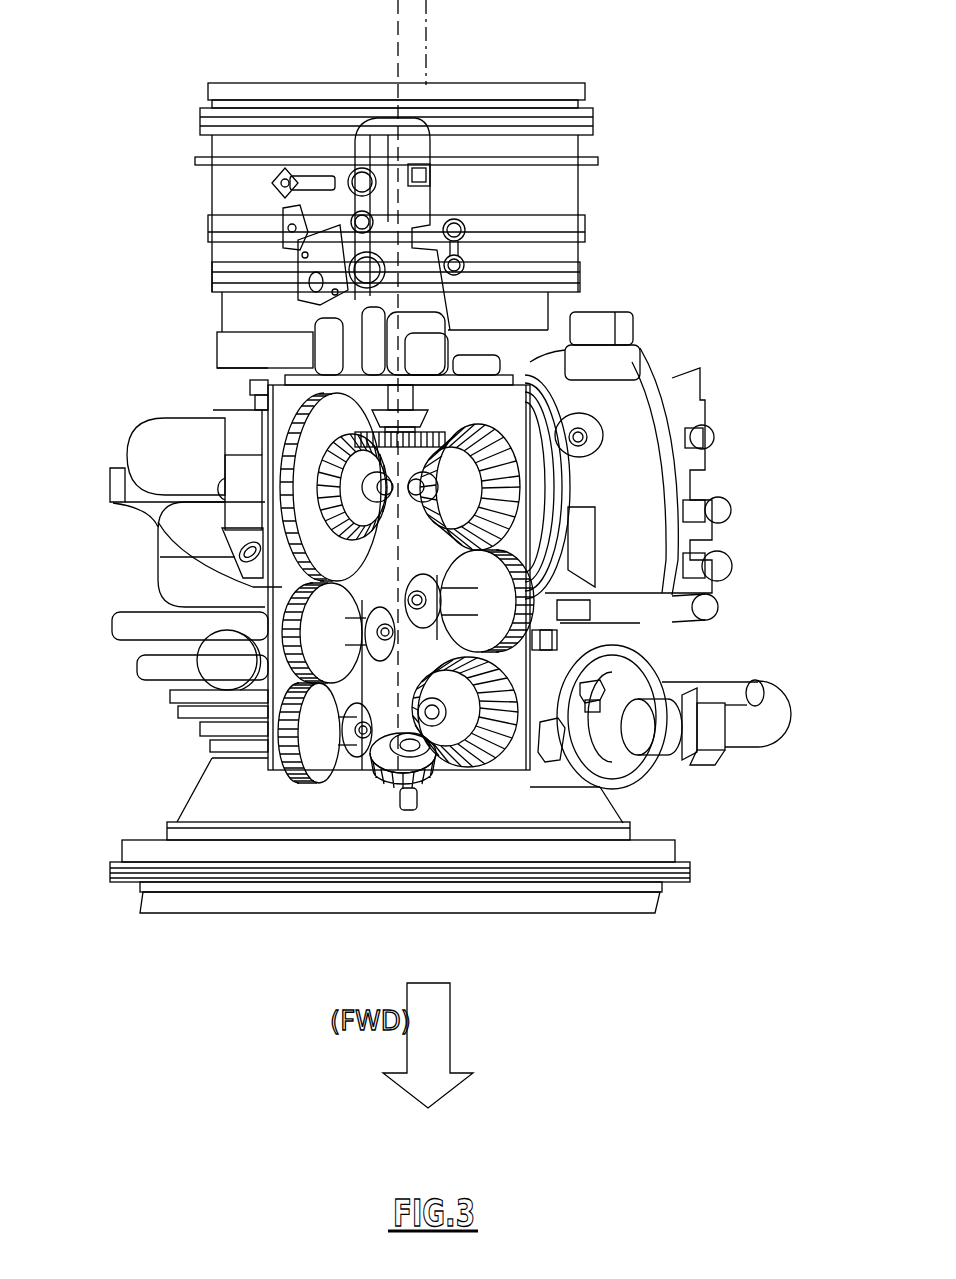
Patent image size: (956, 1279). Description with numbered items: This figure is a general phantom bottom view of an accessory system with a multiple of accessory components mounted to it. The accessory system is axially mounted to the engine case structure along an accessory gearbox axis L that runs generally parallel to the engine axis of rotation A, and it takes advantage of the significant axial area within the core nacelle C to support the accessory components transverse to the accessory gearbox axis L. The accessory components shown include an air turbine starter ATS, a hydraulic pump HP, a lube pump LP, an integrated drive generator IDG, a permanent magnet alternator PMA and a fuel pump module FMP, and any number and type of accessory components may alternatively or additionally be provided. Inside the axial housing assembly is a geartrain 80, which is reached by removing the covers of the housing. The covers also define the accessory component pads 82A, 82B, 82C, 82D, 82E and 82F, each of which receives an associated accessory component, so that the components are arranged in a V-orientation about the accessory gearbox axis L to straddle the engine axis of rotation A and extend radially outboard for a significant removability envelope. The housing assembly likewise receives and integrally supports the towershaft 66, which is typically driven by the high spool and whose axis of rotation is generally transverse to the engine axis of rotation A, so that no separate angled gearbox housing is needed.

The accessory gearbox axis L is at (398, 42).
The engine axis of rotation A is at (426, 30).
The lube pump LP is at (415, 150).
The core nacelle C is at (560, 193).
The accessory component pad 82C is at (432, 398).
The integrated drive generator IDG is at (627, 400).
The accessory component pad 82D is at (262, 448).
The fuel pump module FMP is at (148, 447).
The accessory component pad 82B is at (530, 485).
The accessory component pad 82E is at (248, 575).
The permanent magnet alternator PMA is at (190, 583).
The air turbine starter ATS is at (687, 690).
The hydraulic pump HP is at (207, 693).
The accessory component pad 82F is at (297, 680).
The geartrain 80 is at (313, 765).
The accessory component pad 82A is at (522, 735).
The towershaft 66 is at (460, 900).